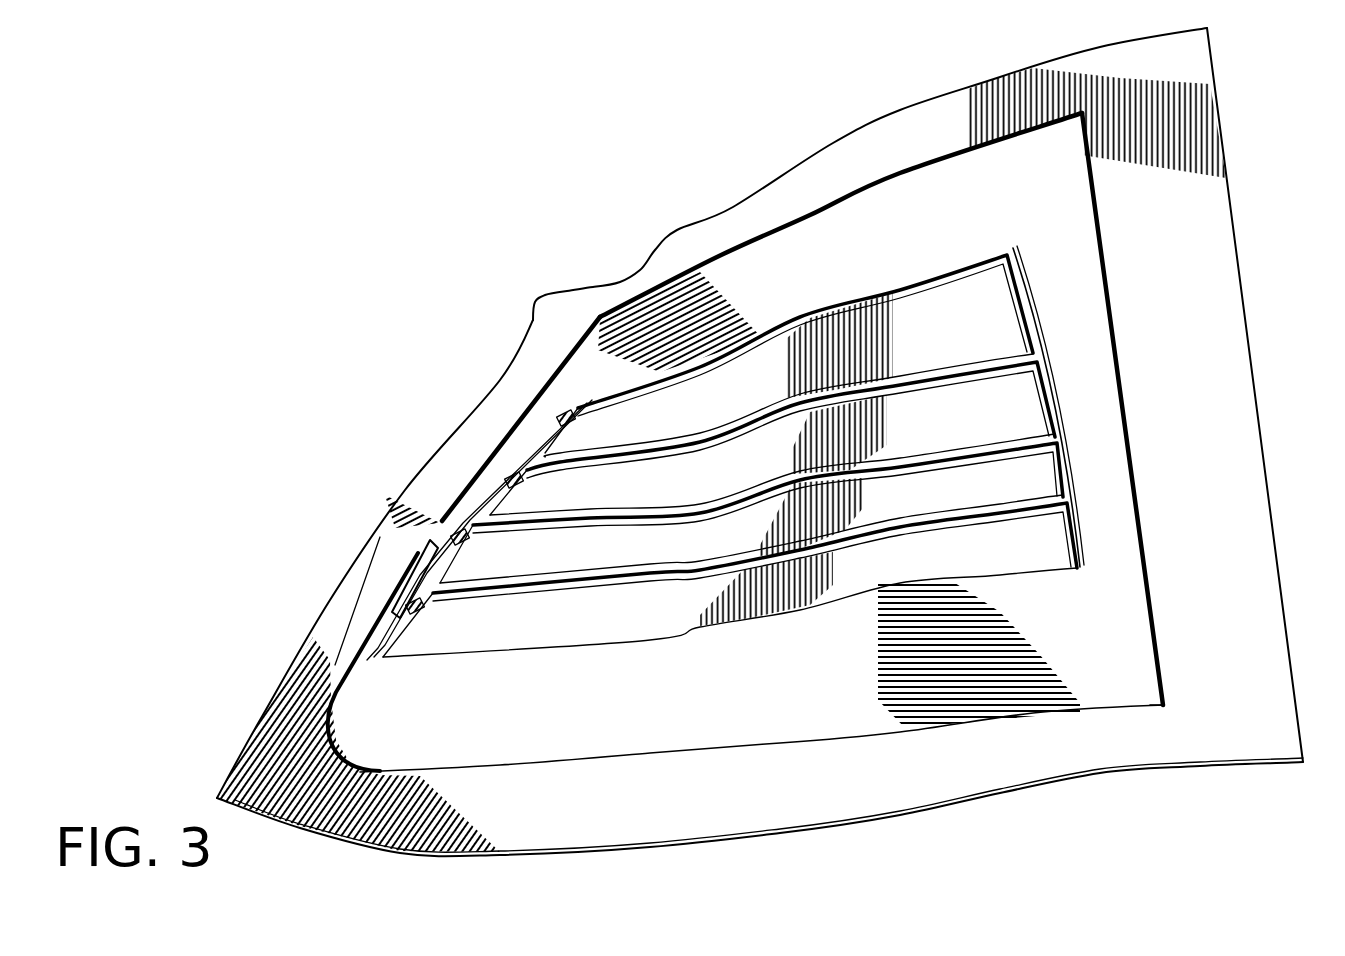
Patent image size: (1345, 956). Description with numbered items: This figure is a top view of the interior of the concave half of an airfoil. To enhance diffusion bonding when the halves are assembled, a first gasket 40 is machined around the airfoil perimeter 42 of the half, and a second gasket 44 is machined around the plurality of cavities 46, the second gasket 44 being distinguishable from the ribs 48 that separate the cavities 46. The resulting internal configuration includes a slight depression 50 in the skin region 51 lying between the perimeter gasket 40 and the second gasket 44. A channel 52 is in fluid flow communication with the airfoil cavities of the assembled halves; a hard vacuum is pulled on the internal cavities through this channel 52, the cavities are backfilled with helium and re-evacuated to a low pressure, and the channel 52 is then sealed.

The first gasket 40 is at (1197, 222).
The airfoil perimeter 42 is at (1243, 296).
The second gasket 44 is at (1070, 497).
The cavities 46 is at (641, 444).
The ribs 48 is at (548, 467).
The depression 50 is at (379, 727).
The skin region 51 is at (1148, 692).
The channel 52 is at (380, 536).